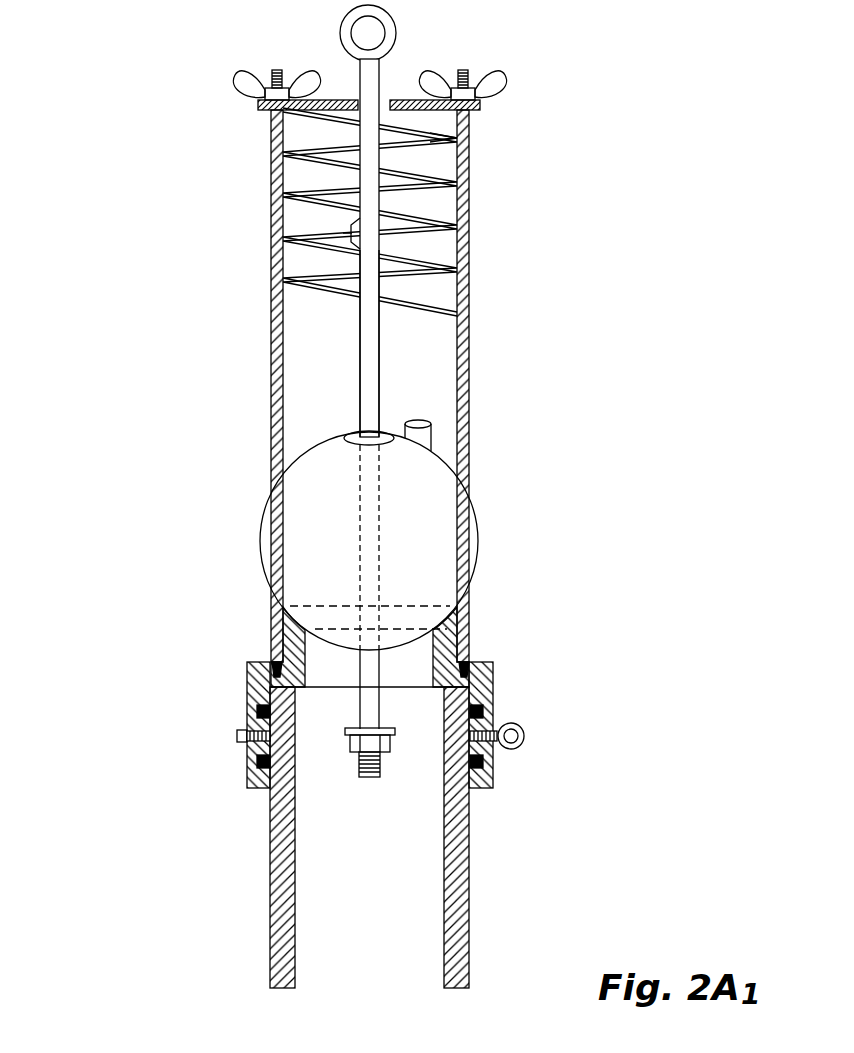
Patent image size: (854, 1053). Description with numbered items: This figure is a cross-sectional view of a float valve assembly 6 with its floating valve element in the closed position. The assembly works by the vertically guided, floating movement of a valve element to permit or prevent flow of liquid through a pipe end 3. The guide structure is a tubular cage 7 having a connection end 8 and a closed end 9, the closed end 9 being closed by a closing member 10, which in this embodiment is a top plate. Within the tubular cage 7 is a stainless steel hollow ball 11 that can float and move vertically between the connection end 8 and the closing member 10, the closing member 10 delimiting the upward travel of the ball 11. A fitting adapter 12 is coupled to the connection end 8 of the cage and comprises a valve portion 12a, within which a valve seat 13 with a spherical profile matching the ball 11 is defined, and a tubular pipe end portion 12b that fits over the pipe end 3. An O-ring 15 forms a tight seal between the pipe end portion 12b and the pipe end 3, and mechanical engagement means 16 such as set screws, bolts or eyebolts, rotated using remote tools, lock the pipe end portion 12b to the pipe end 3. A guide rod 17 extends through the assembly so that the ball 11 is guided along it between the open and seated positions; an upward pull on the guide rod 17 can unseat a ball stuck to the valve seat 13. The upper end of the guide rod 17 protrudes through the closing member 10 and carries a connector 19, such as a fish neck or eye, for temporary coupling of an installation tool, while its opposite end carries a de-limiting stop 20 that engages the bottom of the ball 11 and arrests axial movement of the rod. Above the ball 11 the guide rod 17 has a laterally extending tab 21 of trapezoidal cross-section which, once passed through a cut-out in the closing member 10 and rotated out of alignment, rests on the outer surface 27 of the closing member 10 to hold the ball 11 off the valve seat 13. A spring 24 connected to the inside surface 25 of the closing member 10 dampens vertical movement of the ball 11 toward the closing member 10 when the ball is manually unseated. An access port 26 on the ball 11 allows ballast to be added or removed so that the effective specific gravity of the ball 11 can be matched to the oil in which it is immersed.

The pipe end 3 is at (470, 912).
The float valve assembly 6 is at (218, 395).
The tubular cage 7 is at (470, 278).
The connection end 8 is at (470, 655).
The closed end 9 is at (470, 118).
The closing member 10 is at (394, 100).
The hollow ball 11 is at (262, 540).
The fitting adapter 12 is at (247, 690).
The valve portion 12a is at (292, 645).
The pipe end portion 12b is at (495, 683).
The valve seat 13 is at (397, 630).
The O-ring 15 is at (255, 765).
The mechanical engagement means 16 is at (237, 738).
The guide rod 17 is at (380, 326).
The connector 19 is at (340, 35).
The de-limiting stop 20 is at (355, 752).
The laterally extending tab 21 is at (348, 223).
The spring 24 is at (330, 137).
The inside surface 25 is at (470, 136).
The access port 26 is at (432, 436).
The outer surface 27 is at (337, 100).